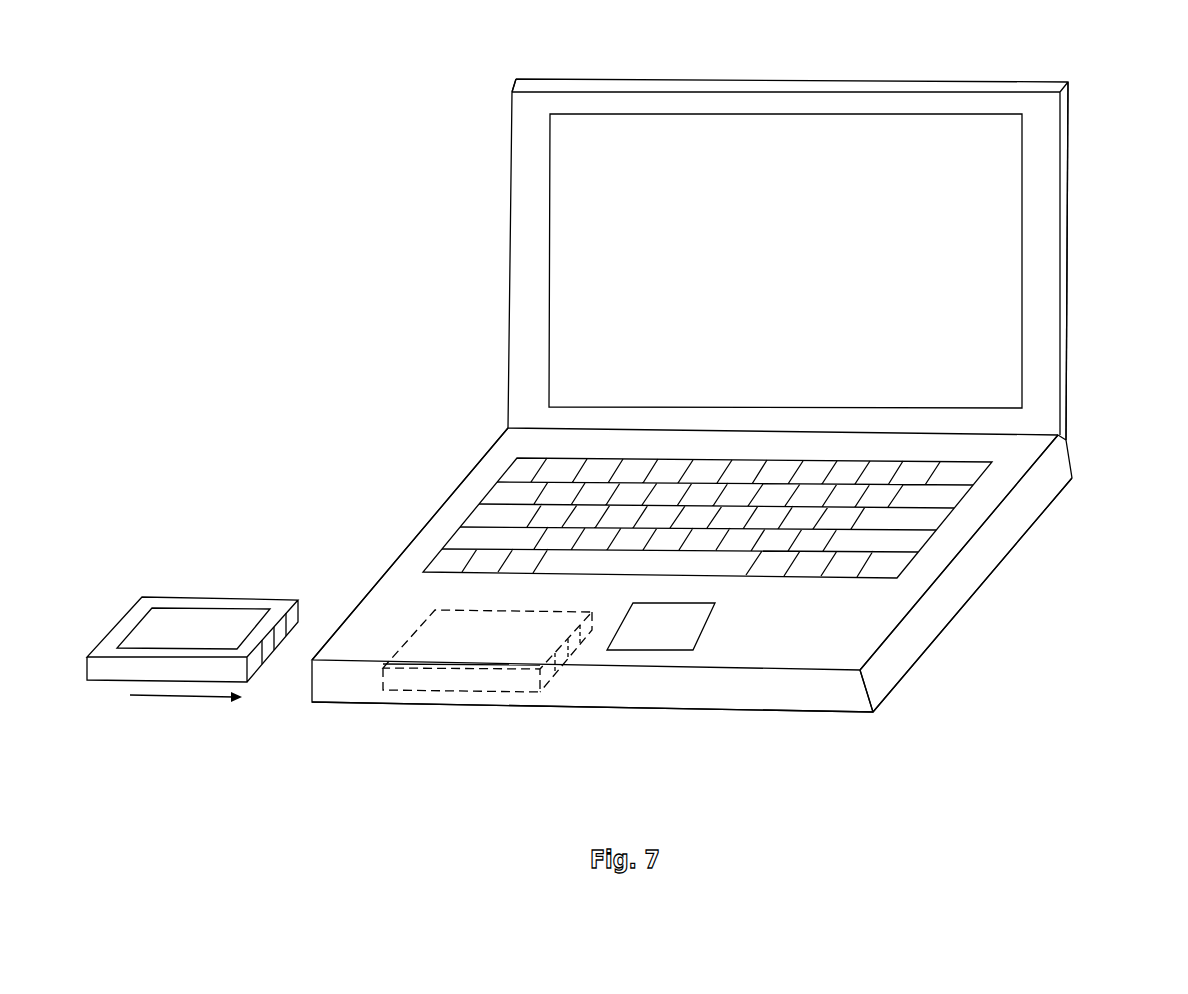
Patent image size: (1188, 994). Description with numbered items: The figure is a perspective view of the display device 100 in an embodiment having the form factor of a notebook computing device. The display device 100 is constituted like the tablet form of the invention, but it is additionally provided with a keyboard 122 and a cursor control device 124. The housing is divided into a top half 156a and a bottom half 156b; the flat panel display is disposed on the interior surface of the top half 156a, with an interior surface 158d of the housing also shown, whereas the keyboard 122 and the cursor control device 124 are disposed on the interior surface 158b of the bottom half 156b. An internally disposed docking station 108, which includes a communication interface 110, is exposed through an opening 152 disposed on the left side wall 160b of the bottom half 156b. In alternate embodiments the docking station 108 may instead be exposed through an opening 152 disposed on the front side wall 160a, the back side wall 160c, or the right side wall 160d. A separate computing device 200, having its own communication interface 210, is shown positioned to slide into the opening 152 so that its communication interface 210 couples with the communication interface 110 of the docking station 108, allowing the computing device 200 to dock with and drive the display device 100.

The display device 100 is at (1100, 62).
The top half 156a is at (1063, 192).
The interior surface 158d is at (1043, 287).
The back side wall 160c is at (1100, 446).
The interior surface of bottom half 158b is at (940, 547).
The right side wall 160d is at (922, 630).
The front side wall 160a is at (785, 695).
The bottom half 156b is at (900, 720).
The left side wall 160b is at (399, 541).
The keyboard 122 is at (835, 563).
The cursor control device 124 is at (687, 638).
The docking station 108 is at (435, 682).
The communication interface 110 is at (550, 680).
The opening 152 is at (290, 710).
The computing device 200 is at (158, 574).
The communication interface 210 is at (324, 606).